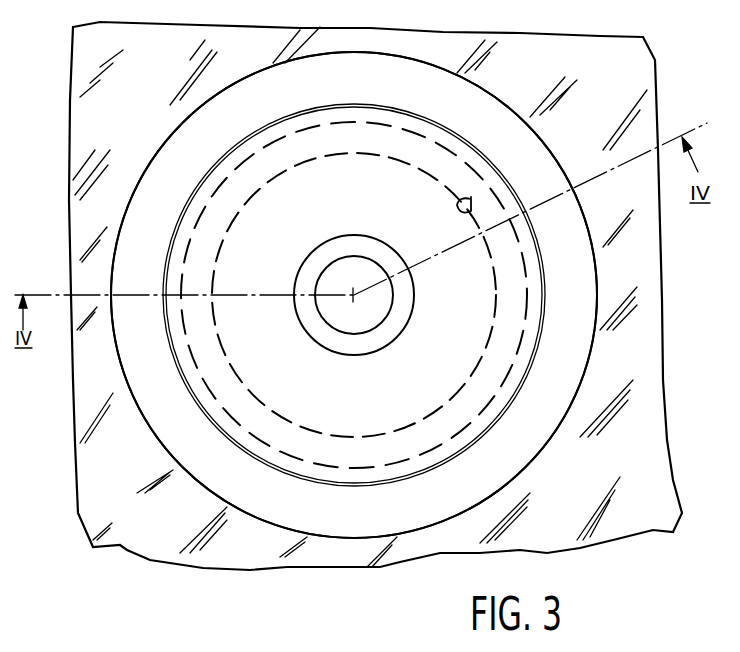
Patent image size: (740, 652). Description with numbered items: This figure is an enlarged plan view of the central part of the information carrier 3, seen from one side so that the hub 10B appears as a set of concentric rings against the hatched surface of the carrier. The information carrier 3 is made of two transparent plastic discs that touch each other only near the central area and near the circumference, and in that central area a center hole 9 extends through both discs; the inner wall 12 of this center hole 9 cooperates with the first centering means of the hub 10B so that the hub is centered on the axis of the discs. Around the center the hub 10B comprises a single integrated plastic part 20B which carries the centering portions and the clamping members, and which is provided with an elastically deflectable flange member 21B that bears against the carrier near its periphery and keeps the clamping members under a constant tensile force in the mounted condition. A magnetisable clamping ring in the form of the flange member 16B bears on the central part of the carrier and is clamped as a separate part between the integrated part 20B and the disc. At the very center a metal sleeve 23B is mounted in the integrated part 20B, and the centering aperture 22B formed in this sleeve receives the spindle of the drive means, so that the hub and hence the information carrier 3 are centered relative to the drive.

The information carrier 3 is at (130, 524).
The center hole 9 is at (429, 170).
The hub 10B is at (443, 63).
The inner wall 12 is at (470, 199).
The flange member 16B is at (263, 495).
The integrated plastic part 20B is at (397, 408).
The deflectable flange member 21B is at (342, 478).
The centering aperture 22B is at (340, 315).
The metal sleeve 23B is at (383, 333).